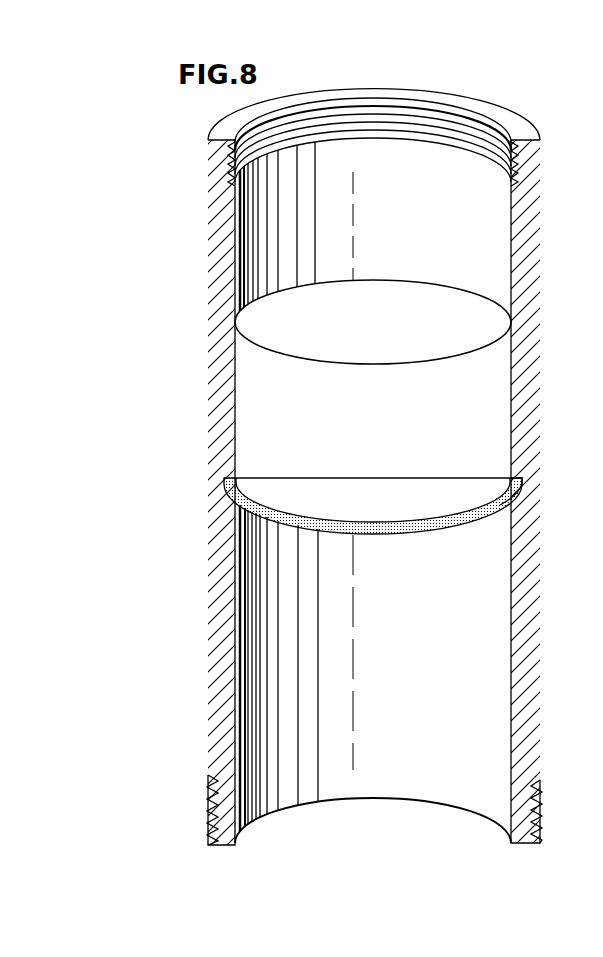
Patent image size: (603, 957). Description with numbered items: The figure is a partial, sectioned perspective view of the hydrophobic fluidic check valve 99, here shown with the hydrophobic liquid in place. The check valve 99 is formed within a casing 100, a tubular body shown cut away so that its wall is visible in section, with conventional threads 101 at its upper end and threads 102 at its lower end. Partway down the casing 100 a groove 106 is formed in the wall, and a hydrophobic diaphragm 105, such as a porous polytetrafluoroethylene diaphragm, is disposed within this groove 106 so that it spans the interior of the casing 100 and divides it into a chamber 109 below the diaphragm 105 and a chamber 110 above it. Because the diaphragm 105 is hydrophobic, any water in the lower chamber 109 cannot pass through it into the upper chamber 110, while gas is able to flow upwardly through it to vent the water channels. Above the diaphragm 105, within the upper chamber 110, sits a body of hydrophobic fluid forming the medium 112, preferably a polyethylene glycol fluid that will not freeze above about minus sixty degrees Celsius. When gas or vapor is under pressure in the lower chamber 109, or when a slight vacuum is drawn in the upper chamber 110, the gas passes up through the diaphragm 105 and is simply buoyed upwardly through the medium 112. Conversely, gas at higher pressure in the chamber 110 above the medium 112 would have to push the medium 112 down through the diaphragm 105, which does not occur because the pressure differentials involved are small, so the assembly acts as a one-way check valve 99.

The fluidic check valve 99 is at (200, 275).
The casing 100 is at (535, 372).
The threads 101 is at (428, 133).
The threads 102 is at (210, 810).
The diaphragm 105 is at (528, 473).
The groove 106 is at (225, 490).
The chamber 109 is at (414, 644).
The chamber 110 is at (404, 240).
The medium 112 is at (395, 439).